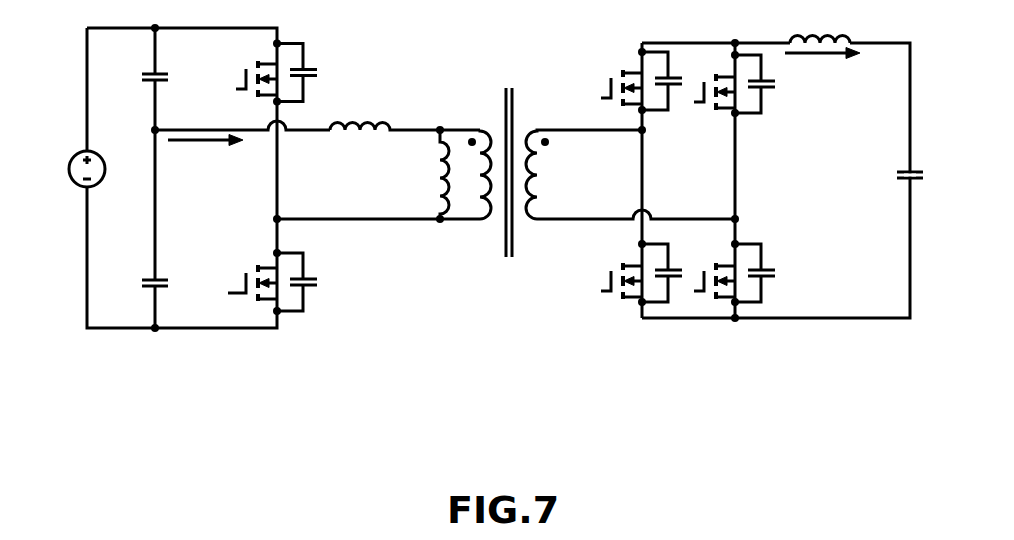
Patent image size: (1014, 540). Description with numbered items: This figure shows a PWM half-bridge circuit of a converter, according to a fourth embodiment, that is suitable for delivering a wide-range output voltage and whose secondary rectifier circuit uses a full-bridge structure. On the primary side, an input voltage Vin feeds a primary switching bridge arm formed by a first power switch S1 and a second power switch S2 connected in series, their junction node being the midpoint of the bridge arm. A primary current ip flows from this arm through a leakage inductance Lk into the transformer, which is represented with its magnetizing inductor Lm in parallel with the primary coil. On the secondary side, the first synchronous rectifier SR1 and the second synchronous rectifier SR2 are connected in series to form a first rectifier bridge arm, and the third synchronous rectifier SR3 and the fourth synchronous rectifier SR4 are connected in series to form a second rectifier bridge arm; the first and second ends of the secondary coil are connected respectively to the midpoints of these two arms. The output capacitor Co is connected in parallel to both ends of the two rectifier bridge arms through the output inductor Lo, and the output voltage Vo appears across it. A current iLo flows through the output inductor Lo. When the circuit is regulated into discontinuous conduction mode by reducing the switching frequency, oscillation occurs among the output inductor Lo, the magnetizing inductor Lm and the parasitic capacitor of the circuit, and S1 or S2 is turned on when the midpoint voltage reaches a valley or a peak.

The input voltage Vin is at (70, 169).
The primary current ip is at (205, 152).
The first power switch S1 is at (287, 282).
The second power switch S2 is at (291, 73).
The leakage inductance Lk is at (405, 142).
The magnetizing inductor Lm is at (426, 174).
The first synchronous rectifier SR1 is at (621, 273).
The second synchronous rectifier SR2 is at (621, 81).
The third synchronous rectifier SR3 is at (757, 84).
The fourth synchronous rectifier SR4 is at (763, 273).
The output inductor Lo is at (820, 26).
The current on the output inductor iLo is at (822, 65).
The output capacitor Co is at (893, 178).
The output voltage Vo is at (932, 175).